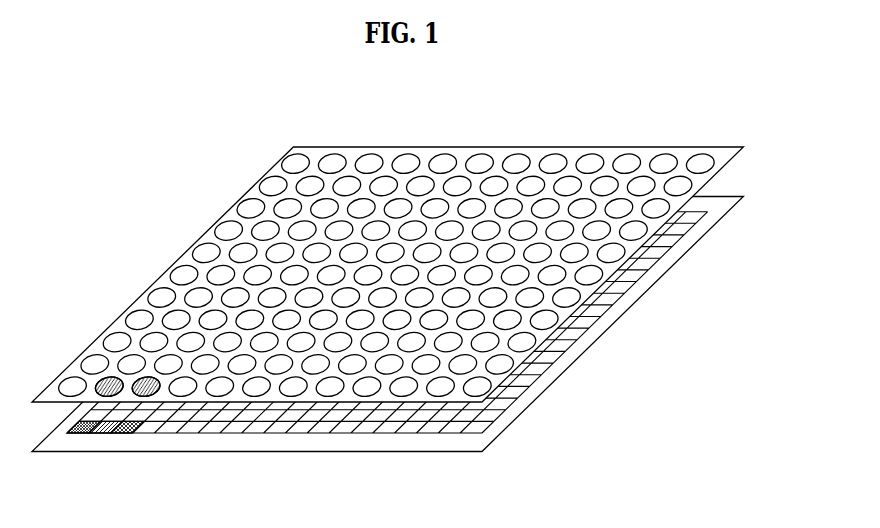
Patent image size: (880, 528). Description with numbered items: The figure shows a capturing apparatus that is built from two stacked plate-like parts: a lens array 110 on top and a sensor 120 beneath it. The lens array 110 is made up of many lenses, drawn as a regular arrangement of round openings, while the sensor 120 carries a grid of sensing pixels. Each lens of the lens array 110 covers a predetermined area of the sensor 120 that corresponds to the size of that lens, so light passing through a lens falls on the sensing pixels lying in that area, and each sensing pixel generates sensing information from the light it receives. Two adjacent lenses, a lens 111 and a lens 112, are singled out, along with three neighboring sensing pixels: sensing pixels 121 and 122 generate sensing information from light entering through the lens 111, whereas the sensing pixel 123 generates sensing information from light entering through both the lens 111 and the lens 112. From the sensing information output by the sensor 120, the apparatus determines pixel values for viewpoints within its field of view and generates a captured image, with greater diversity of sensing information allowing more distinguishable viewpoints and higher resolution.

The lens array 110 is at (714, 146).
The lens 111 is at (108, 378).
The lens 112 is at (145, 378).
The sensor 120 is at (723, 214).
The sensing pixel 121 is at (69, 434).
The sensing pixel 122 is at (97, 434).
The sensing pixel 123 is at (123, 434).